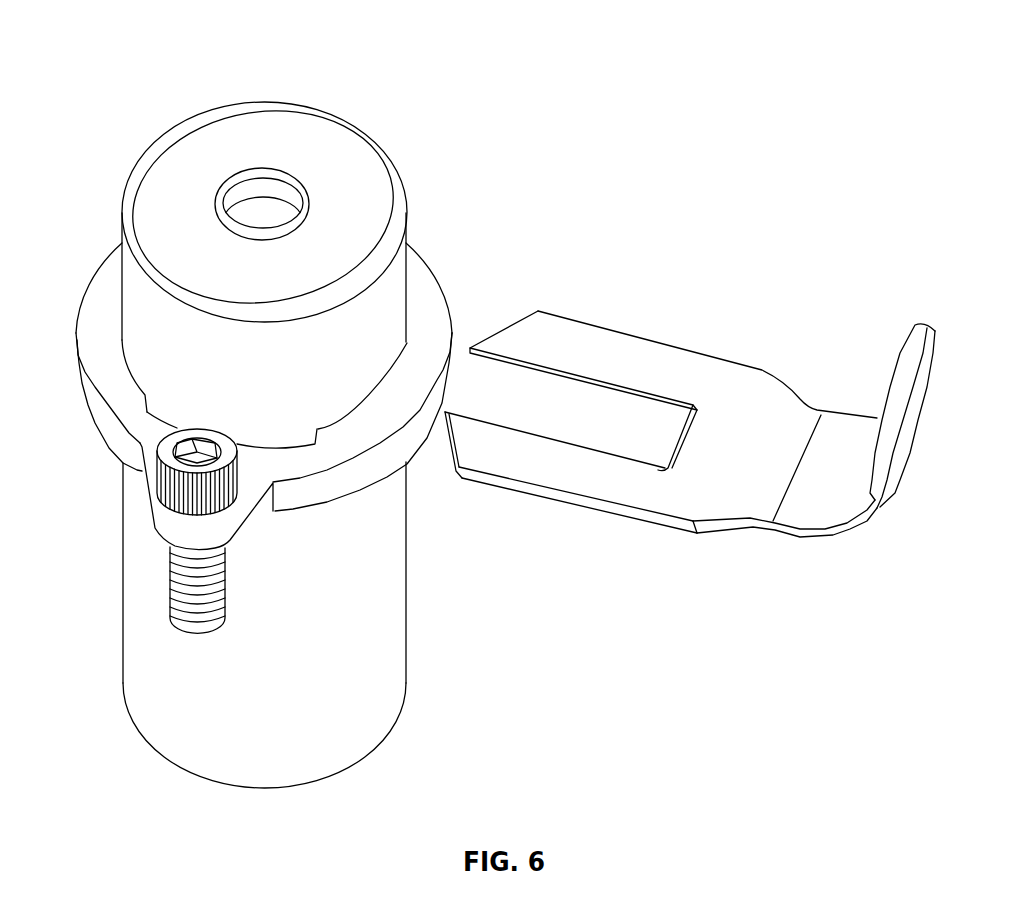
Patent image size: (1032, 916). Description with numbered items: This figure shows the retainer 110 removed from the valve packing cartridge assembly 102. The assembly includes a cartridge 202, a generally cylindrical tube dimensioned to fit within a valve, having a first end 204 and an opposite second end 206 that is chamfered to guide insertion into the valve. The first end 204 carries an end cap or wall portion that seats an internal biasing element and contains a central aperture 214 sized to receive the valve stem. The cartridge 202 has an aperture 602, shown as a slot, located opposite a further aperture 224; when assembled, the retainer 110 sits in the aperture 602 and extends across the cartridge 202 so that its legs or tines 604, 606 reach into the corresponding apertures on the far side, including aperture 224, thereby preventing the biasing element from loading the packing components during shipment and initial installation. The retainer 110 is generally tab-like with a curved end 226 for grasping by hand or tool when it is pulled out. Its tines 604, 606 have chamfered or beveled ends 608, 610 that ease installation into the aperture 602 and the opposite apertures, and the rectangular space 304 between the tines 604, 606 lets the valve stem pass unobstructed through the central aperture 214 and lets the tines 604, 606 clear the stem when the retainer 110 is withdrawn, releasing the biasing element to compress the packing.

The valve packing cartridge assembly 102 is at (349, 48).
The retainer 110 is at (794, 537).
The cartridge 202 is at (122, 650).
The first end 204 is at (203, 112).
The second end 206 is at (200, 774).
The central aperture 214 is at (293, 186).
The aperture 224 is at (137, 385).
The curved end 226 is at (907, 335).
The rectangular space 304 is at (624, 427).
The aperture 602 is at (402, 358).
The tine 604 is at (597, 326).
The tine 606 is at (496, 418).
The chamfered end 608 is at (518, 322).
The chamfered end 610 is at (448, 460).